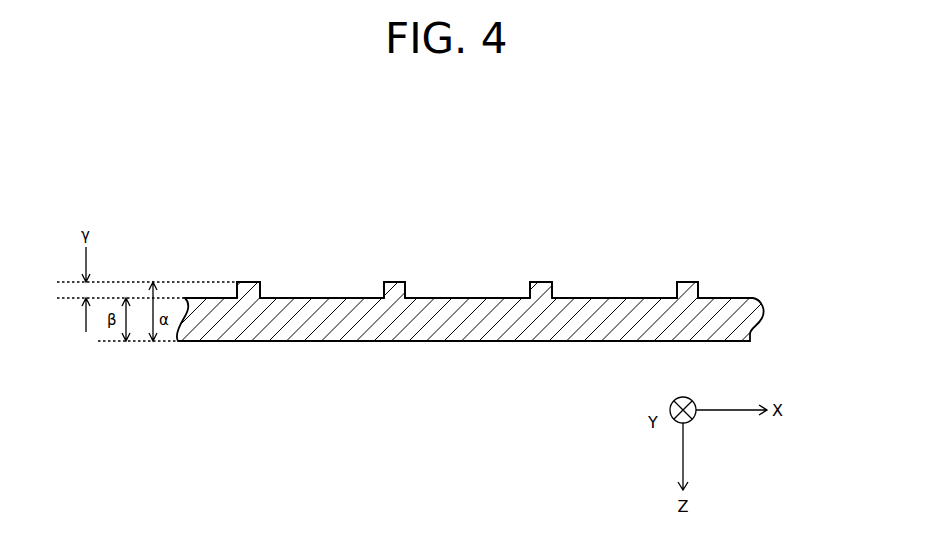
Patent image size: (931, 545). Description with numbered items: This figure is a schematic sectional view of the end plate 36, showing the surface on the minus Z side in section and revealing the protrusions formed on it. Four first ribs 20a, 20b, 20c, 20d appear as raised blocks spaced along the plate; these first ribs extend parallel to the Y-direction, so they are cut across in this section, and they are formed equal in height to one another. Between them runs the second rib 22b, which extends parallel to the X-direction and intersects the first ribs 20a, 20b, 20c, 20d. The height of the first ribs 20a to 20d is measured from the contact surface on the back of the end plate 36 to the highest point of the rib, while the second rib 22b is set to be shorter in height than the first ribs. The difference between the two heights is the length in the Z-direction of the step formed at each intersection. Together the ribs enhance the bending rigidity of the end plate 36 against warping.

The end plate 36 is at (579, 178).
The first rib 20a is at (241, 282).
The first rib 20b is at (386, 282).
The first rib 20c is at (532, 282).
The first rib 20d is at (678, 282).
The second rib 22b is at (312, 298).